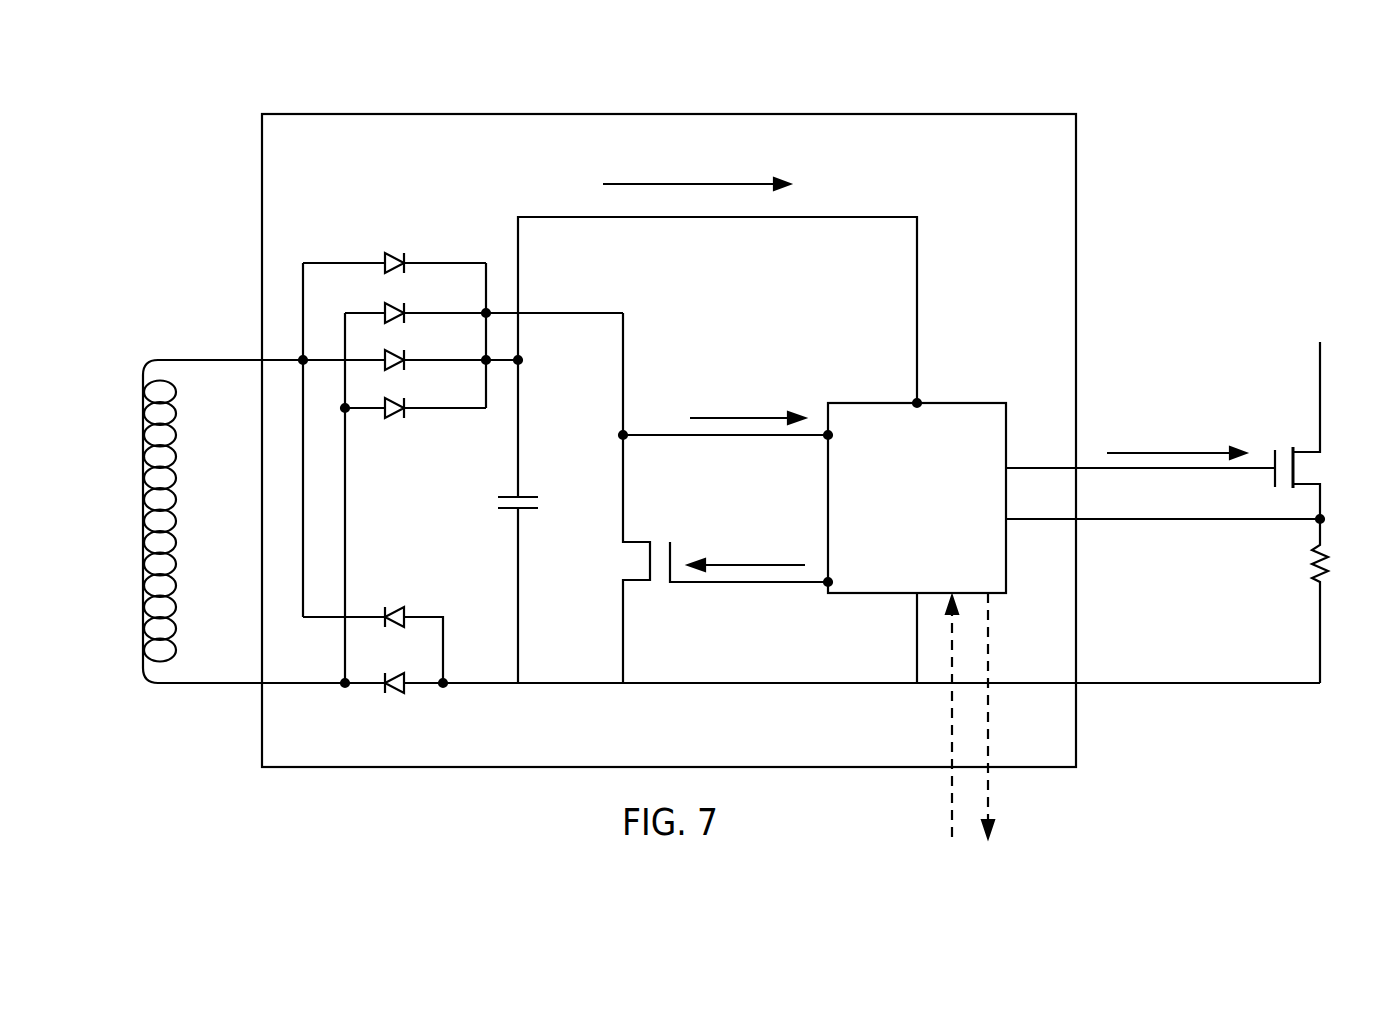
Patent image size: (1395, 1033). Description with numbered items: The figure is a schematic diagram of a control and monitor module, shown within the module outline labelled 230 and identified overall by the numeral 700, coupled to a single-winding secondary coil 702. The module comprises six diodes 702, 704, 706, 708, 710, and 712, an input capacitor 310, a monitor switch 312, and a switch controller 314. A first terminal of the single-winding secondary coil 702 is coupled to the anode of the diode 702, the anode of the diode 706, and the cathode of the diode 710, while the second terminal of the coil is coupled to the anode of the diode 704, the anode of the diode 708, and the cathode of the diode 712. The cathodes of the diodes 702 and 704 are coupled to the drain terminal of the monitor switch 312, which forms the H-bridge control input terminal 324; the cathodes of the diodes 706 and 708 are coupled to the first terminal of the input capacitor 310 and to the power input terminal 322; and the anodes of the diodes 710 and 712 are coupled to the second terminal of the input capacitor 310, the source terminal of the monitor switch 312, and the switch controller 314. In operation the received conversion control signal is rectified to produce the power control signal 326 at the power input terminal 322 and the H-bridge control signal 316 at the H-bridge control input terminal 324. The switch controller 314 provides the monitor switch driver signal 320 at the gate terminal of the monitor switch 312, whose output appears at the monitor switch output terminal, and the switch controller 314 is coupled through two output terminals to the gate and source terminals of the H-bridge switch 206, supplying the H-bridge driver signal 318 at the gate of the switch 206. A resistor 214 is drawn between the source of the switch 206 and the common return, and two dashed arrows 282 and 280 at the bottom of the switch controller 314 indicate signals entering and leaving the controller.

The circuit 700 is at (1318, 113).
The control and monitor module 230 is at (817, 113).
The power control signal 326 is at (826, 583).
The H-bridge control input terminal 324 is at (828, 434).
The power input terminal 322 is at (917, 403).
The H-bridge control signal 316 is at (688, 358).
The switch controller 314 is at (933, 560).
The monitor switch driver signal 320 is at (668, 486).
The monitor switch 312 is at (630, 563).
The input capacitor 310 is at (505, 510).
The single-winding secondary coil 702 is at (143, 487).
The diode 704 is at (398, 307).
The diode 706 is at (398, 355).
The diode 708 is at (398, 417).
The diode 710 is at (392, 607).
The diode 712 is at (392, 694).
The H-bridge driver signal 318 is at (1177, 382).
The switch 206 is at (1313, 467).
The resistor 214 is at (1313, 560).
The dashed arrow (input) 282 is at (950, 808).
The dashed arrow (output) 280 is at (990, 806).